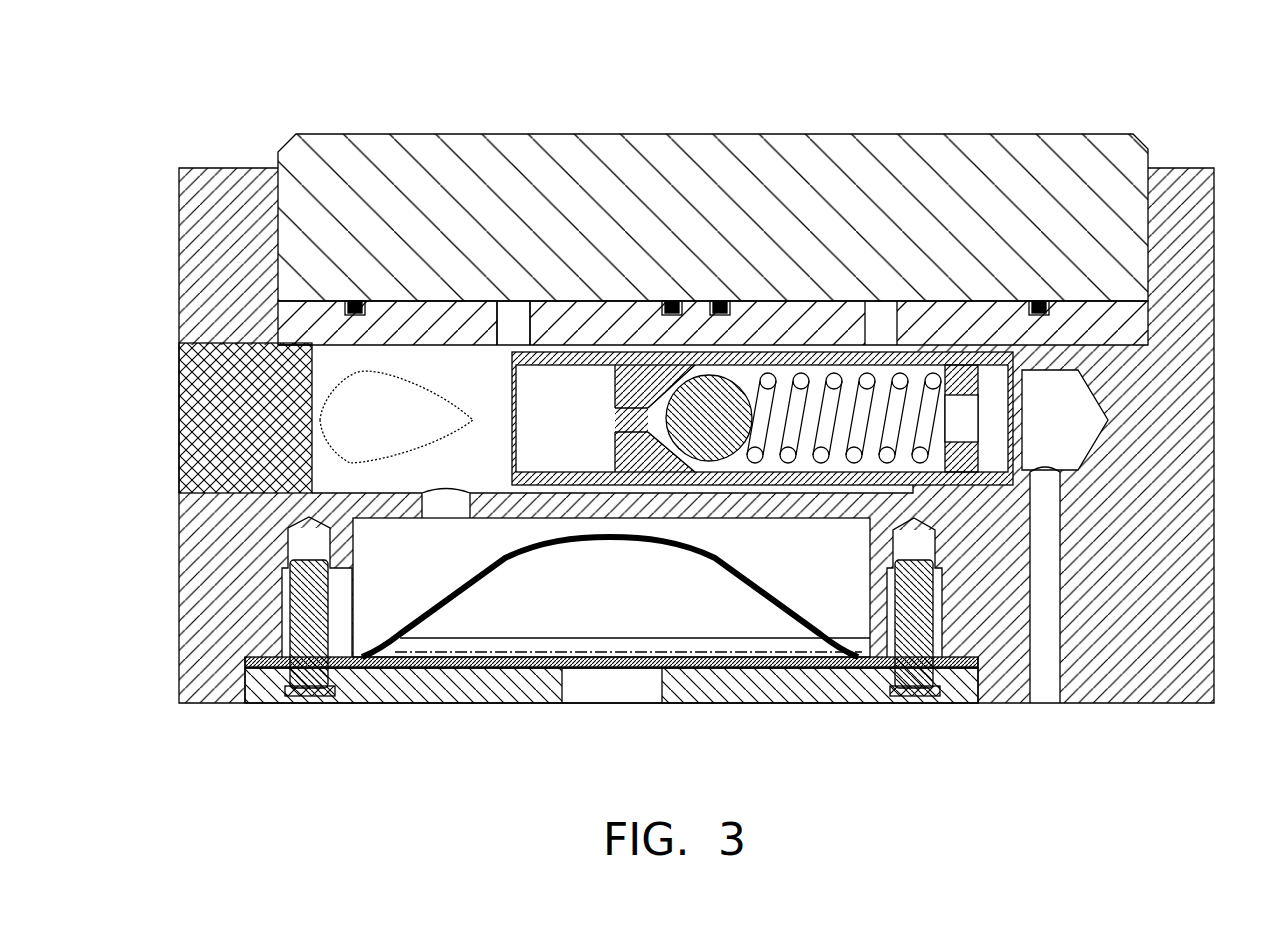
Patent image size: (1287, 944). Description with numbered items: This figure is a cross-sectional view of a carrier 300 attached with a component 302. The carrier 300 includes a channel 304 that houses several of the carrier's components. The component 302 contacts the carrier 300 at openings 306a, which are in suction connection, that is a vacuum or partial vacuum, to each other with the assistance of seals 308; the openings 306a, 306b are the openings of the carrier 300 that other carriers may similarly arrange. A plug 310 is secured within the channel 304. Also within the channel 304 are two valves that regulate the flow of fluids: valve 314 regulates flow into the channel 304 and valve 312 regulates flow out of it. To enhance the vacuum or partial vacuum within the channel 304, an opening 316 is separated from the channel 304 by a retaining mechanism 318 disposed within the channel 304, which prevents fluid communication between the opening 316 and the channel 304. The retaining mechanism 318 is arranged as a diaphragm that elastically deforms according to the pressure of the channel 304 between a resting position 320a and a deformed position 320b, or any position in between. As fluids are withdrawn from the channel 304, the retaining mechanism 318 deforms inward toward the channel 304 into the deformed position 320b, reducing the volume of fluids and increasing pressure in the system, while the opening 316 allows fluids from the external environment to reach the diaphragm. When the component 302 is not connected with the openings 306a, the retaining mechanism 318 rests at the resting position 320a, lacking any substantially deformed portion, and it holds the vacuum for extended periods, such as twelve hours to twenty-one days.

The carrier 300 is at (145, 125).
The component 302 is at (339, 132).
The channel 304 is at (322, 338).
The openings 306a is at (514, 300).
The openings 306b is at (1045, 706).
The seals 308 is at (667, 300).
The plug 310 is at (180, 459).
The valve 312 is at (1020, 358).
The valve 314 is at (348, 464).
The opening 316 is at (640, 705).
The retaining mechanism 318 is at (465, 668).
The resting position 320a is at (568, 667).
The deformed position 320b is at (778, 598).